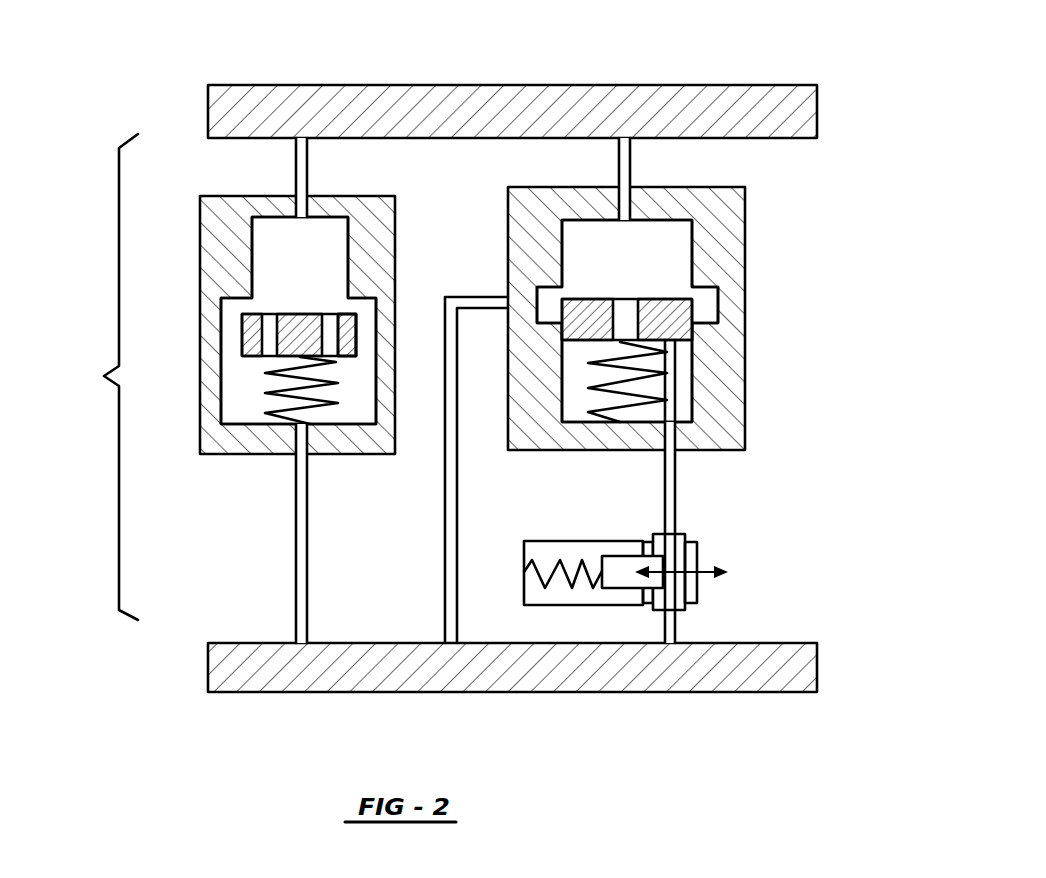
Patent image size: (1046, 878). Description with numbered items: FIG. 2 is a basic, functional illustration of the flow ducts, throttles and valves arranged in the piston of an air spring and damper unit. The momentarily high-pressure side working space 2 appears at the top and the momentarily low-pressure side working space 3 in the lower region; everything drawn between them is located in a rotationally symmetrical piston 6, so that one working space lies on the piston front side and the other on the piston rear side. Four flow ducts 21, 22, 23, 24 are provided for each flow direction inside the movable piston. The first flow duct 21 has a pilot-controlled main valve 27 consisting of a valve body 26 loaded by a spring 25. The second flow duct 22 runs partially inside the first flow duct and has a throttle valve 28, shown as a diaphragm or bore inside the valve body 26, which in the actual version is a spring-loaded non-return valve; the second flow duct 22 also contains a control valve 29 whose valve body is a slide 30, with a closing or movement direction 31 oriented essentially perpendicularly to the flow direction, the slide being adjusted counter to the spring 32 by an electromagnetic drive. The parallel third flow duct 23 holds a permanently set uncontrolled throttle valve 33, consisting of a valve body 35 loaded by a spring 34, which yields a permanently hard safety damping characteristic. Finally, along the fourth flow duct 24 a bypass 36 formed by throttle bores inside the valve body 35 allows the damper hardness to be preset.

The high-pressure side working space 2 is at (737, 110).
The low-pressure side working space 3 is at (777, 655).
The piston 6 is at (108, 377).
The first flow duct 21 is at (618, 172).
The second flow duct 22 is at (627, 327).
The third flow duct 23 is at (296, 183).
The fourth flow duct 24 is at (296, 163).
The spring 25 is at (653, 373).
The valve body 26 is at (673, 315).
The main valve 27 is at (785, 193).
The throttle valve 28 is at (630, 283).
The control valve 29 is at (692, 552).
The slide 30 is at (618, 577).
The movement direction 31 is at (703, 573).
The spring 32 is at (562, 578).
The throttle valve 33 is at (232, 242).
The spring 34 is at (315, 410).
The valve body 35 is at (368, 365).
The bypass 36 is at (332, 335).